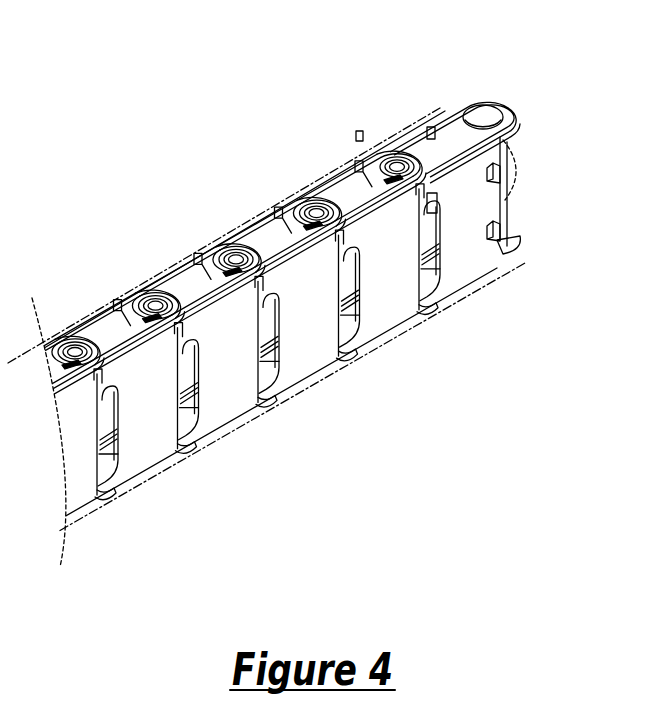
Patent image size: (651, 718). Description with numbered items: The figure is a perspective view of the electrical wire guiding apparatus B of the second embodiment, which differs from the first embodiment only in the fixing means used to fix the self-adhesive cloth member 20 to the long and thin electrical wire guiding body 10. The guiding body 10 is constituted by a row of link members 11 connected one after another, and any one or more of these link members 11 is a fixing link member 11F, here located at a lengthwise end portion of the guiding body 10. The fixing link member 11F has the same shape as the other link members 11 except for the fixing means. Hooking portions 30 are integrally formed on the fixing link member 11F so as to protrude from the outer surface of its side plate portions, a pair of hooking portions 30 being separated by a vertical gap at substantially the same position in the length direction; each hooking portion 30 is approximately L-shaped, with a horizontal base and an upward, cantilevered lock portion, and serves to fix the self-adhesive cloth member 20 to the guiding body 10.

The electrical wire guiding apparatus B is at (158, 65).
The electrical wire guiding body 10 is at (283, 130).
The link member 11 is at (147, 447).
The fixing link member 11F is at (465, 268).
The self-adhesive cloth member 20 is at (237, 427).
The hooking portion 30 is at (500, 178).